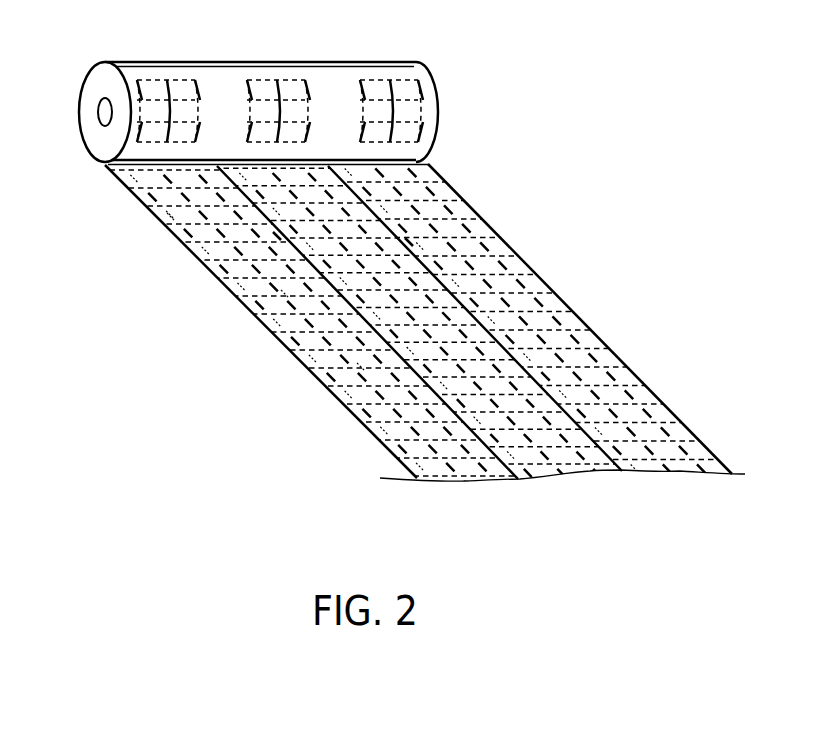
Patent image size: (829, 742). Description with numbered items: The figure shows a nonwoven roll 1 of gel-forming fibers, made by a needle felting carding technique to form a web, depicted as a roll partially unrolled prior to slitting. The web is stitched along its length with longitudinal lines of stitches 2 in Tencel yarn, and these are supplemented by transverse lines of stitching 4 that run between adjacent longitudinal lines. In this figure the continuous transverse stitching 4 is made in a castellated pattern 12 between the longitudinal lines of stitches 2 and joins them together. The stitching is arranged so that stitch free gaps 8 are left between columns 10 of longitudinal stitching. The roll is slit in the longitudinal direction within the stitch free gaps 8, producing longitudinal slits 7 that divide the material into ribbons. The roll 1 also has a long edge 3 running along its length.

The nonwoven roll 1 is at (460, 108).
The longitudinal lines of stitches 2 is at (173, 218).
The long edge 3 is at (548, 285).
The transverse lines of stitching 4 is at (603, 358).
The longitudinal slits 7 is at (278, 238).
The stitch free gaps 8 is at (502, 470).
The columns 10 is at (445, 468).
The castellated pattern 12 is at (558, 453).